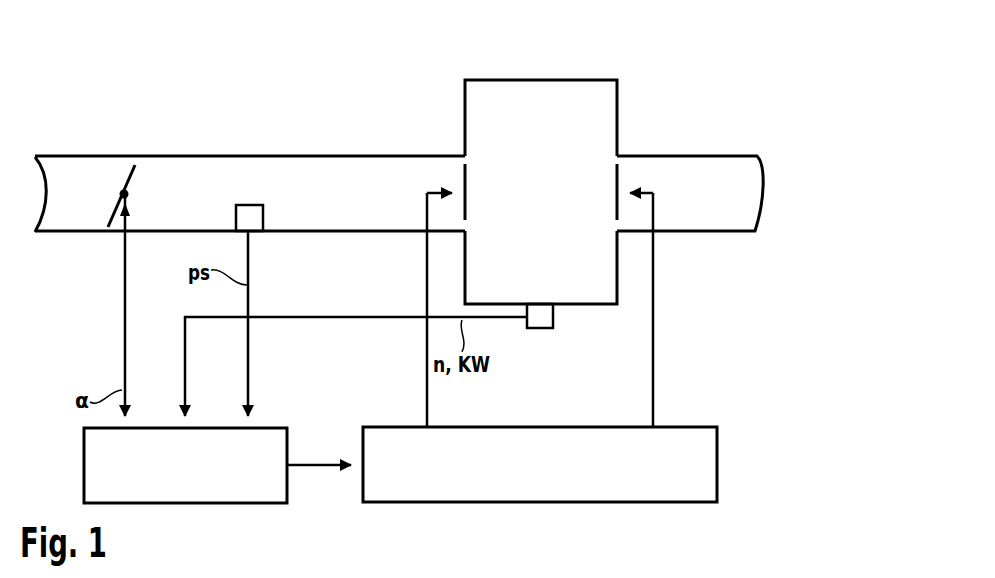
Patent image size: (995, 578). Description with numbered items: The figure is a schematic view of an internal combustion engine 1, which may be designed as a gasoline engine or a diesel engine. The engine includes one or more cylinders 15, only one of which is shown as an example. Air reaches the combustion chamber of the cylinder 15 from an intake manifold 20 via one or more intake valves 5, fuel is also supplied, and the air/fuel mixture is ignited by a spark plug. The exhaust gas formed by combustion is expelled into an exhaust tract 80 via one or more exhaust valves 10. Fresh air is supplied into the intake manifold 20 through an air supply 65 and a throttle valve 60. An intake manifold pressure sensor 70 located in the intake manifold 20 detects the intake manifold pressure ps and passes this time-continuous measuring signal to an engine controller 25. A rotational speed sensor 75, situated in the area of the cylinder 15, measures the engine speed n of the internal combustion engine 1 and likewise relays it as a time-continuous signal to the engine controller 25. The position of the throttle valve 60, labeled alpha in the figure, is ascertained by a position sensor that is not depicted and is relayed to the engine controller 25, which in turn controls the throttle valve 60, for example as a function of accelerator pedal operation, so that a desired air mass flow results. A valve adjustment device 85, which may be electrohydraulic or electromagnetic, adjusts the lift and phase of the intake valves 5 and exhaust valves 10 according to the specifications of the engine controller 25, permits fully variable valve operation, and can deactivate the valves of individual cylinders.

The internal combustion engine 1 is at (672, 75).
The intake valve 5 is at (462, 175).
The exhaust valve 10 is at (620, 173).
The cylinder 15 is at (541, 80).
The intake manifold 20 is at (242, 168).
The engine controller 25 is at (275, 428).
The throttle valve 60 is at (125, 182).
The air supply 65 is at (62, 168).
The intake manifold pressure sensor 70 is at (254, 233).
The rotational speed sensor 75 is at (540, 328).
The exhaust tract 80 is at (742, 168).
The valve adjustment device 85 is at (685, 427).